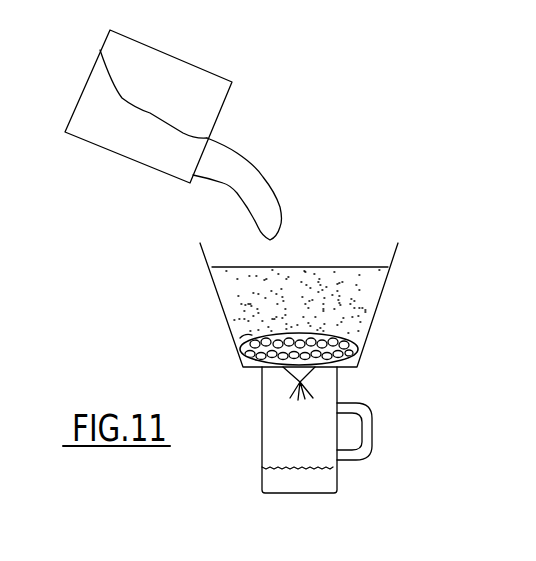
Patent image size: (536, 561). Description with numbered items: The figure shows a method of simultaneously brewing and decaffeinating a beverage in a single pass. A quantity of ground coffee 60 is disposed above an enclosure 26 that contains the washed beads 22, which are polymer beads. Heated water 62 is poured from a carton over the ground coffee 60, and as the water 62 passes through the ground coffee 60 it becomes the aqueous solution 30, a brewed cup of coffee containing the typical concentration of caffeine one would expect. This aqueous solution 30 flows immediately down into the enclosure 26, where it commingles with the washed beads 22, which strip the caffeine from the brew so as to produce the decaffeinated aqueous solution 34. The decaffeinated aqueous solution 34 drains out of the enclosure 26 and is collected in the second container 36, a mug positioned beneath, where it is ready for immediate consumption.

The water 62 is at (232, 188).
The ground coffee 60 is at (332, 277).
The aqueous solution 30 is at (353, 328).
The washed beads 22 is at (367, 348).
The enclosure 26 is at (242, 338).
The second container 36 is at (372, 430).
The decaffeinated aqueous solution 34 is at (290, 388).